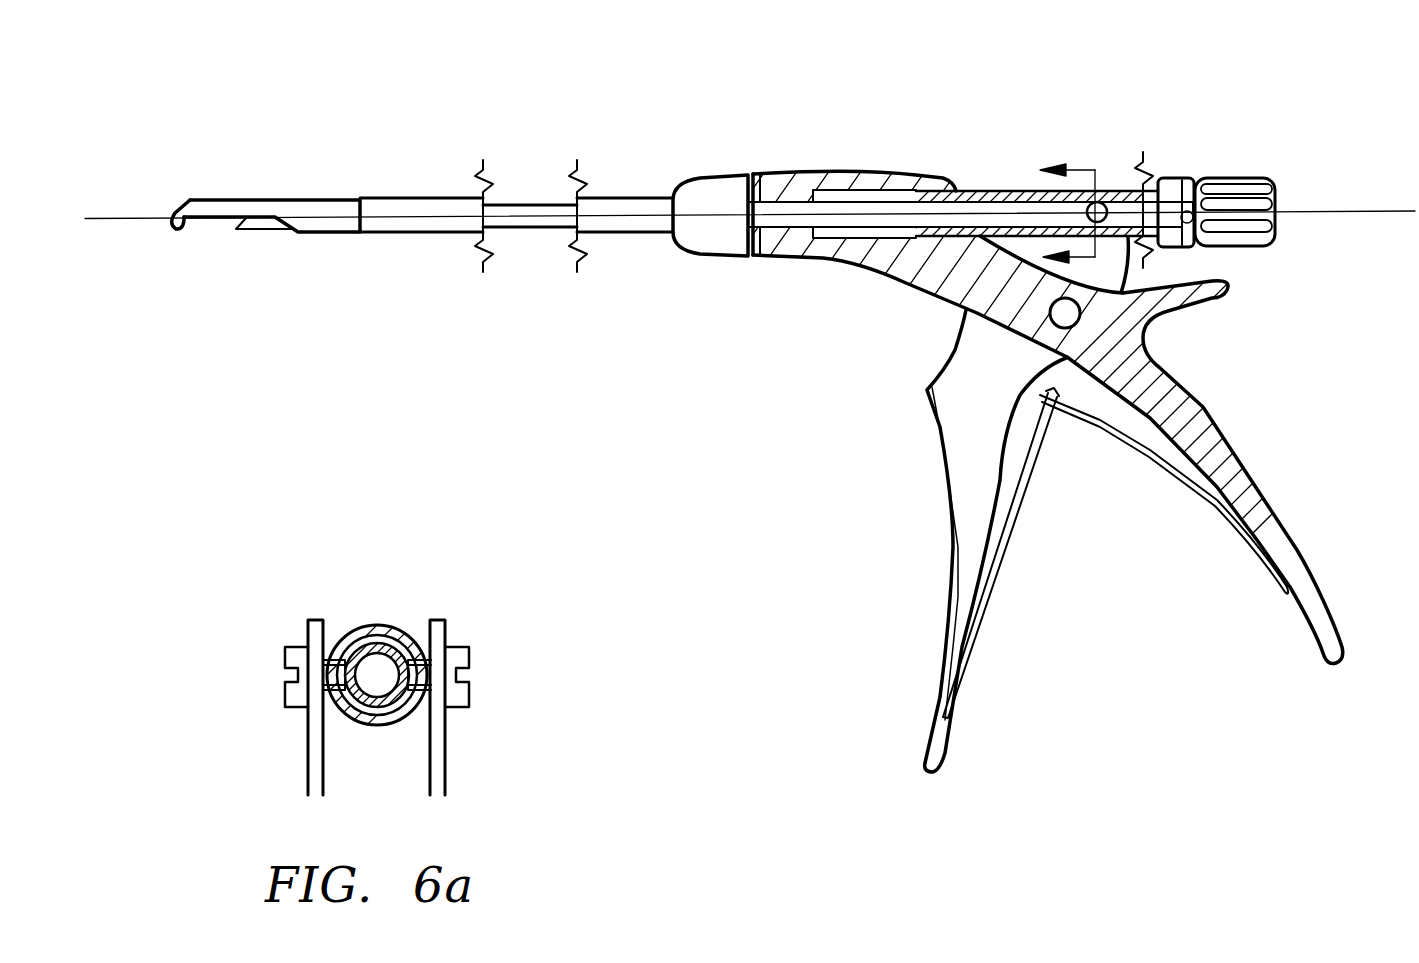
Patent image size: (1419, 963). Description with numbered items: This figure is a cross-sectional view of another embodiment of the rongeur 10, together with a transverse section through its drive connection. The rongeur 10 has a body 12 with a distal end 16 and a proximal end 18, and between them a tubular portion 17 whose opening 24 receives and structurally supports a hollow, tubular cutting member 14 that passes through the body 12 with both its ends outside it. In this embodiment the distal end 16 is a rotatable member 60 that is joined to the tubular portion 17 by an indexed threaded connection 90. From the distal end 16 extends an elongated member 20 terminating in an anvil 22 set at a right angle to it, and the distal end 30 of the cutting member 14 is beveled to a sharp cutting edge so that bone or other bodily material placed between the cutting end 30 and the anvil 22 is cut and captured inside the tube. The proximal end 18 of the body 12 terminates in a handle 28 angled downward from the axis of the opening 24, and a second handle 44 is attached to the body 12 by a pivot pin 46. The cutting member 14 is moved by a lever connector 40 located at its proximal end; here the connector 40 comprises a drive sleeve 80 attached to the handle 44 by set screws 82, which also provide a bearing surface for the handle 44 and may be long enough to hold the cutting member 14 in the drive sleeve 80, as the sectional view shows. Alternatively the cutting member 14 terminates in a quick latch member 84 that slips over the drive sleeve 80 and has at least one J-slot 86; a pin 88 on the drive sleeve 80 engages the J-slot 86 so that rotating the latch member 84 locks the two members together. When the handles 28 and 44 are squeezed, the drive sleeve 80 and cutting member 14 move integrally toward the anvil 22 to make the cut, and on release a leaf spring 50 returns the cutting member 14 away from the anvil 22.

In FIG. 6, the rongeur 10 is at (750, 398).
In FIG. 6, the body 12 is at (873, 250).
In FIG. 6, the cutting member 14 is at (930, 210).
In FIG. 6A, the cutting member 14 is at (397, 655).
In FIG. 6, the distal end 16 is at (324, 163).
In FIG. 6, the tubular portion 17 is at (865, 148).
In FIG. 6, the proximal end 18 is at (1228, 388).
In FIG. 6, the elongated member 20 is at (455, 203).
In FIG. 6, the anvil 22 is at (180, 232).
In FIG. 6, the opening 24 is at (823, 193).
In FIG. 6, the handle 28 is at (1215, 453).
In FIG. 6, the distal end 30 is at (232, 217).
In FIG. 6, the lever connector 40 is at (1013, 193).
In FIG. 6, the second handle 44 is at (945, 457).
In FIG. 6, the pivot pin 46 is at (1060, 313).
In FIG. 6, the leaf spring 50 is at (1025, 470).
In FIG. 6, the rotatable member 60 is at (618, 207).
In FIG. 6A, the drive sleeve 80 is at (352, 642).
In FIG. 6A, the set screws 82 is at (422, 675).
In FIG. 6, the quick latch member 84 is at (1247, 203).
In FIG. 6, the J-slot 86 is at (1190, 198).
In FIG. 6, the pin 88 is at (1192, 223).
In FIG. 6, the indexed threaded connection 90 is at (667, 270).